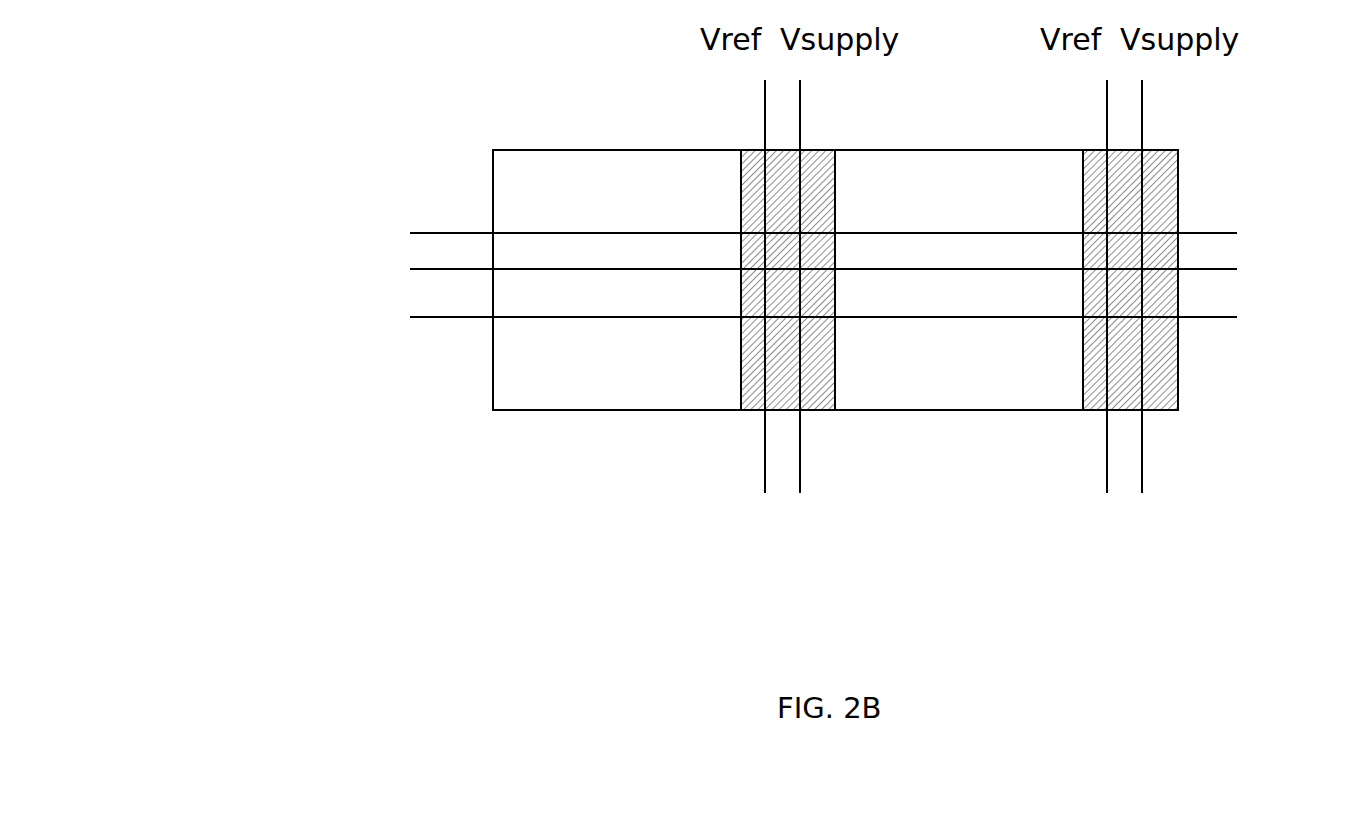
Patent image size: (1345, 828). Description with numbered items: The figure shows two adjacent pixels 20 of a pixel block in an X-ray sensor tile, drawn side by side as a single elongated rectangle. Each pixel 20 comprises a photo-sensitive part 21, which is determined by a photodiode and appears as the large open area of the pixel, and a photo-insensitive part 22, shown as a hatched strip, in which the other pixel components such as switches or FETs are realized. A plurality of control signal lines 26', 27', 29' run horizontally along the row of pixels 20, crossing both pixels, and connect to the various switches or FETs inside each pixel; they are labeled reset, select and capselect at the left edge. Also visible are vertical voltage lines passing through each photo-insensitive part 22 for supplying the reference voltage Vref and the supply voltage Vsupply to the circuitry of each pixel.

The pixel 20 is at (502, 411).
The photo-sensitive part 21 is at (570, 198).
The photo-insensitive part 22 is at (827, 197).
The control signal line 27' is at (769, 226).
The control signal line 29' is at (769, 270).
The control signal line 26' is at (769, 316).